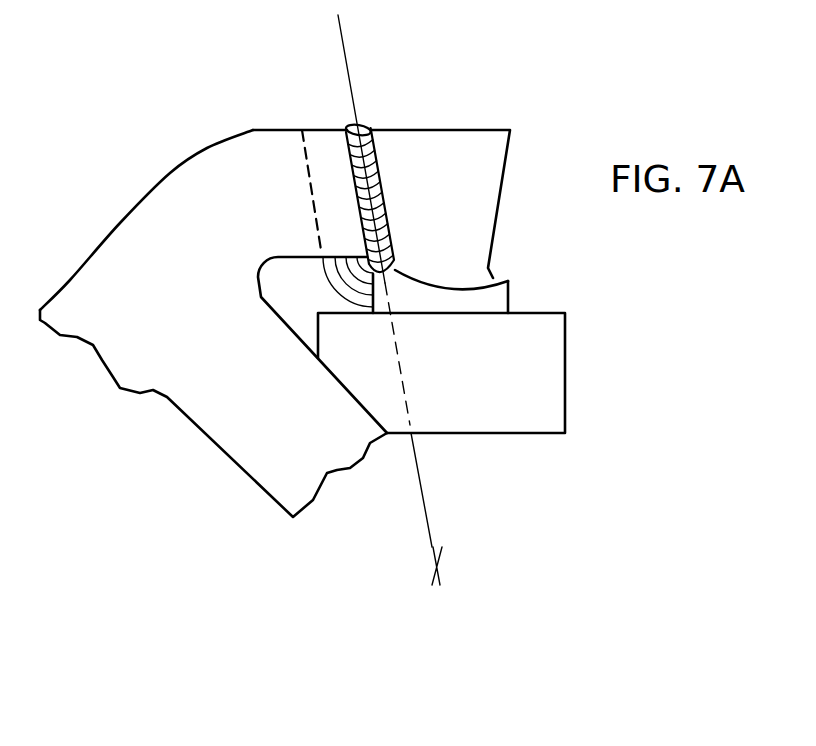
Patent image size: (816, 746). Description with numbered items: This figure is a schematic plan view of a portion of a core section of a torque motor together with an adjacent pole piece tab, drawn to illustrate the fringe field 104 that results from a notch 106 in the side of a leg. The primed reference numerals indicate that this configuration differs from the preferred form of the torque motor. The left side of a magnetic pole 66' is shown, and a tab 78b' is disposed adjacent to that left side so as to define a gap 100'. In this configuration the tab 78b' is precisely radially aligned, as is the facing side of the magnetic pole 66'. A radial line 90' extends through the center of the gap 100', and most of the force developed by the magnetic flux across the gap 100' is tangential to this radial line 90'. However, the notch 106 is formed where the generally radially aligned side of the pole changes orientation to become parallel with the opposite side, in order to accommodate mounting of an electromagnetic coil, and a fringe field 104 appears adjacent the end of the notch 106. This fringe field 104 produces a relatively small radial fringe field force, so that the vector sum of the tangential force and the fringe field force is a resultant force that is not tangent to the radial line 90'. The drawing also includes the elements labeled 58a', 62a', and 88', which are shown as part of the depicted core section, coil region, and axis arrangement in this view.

The fringe field 104 is at (213, 323).
The tab 78b' is at (230, 171).
The cutting insert 58a' is at (449, 170).
The magnetic pole 66' is at (451, 237).
The notch 106 is at (493, 279).
The holder 62a' is at (492, 368).
The gap 100' is at (317, 177).
The radial line 90' is at (380, 145).
The axis 88' is at (462, 434).